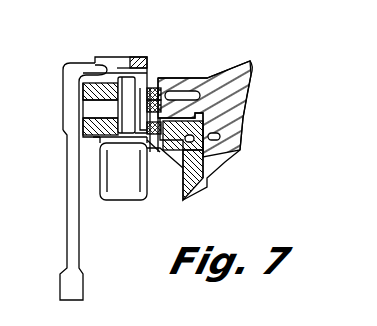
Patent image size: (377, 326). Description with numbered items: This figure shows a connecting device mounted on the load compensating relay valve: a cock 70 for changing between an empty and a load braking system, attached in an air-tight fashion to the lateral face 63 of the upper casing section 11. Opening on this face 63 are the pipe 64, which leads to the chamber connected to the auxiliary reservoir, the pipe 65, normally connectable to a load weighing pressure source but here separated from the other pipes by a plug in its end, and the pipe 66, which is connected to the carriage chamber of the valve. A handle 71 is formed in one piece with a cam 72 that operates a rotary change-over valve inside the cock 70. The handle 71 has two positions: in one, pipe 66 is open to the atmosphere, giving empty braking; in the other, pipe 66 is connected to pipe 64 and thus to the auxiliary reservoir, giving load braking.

The upper casing section 11 is at (249, 62).
The lateral face 63 is at (154, 88).
The pipe 64 is at (212, 136).
The pipe 65 is at (184, 91).
The pipe 66 is at (203, 165).
The cock 70 is at (124, 178).
The handle 71 is at (67, 213).
The cam 72 is at (128, 92).